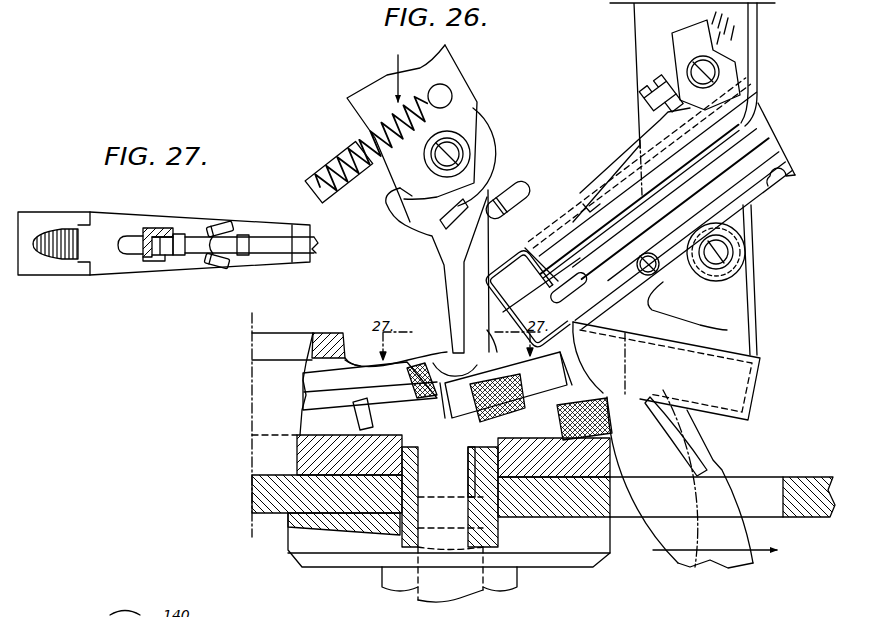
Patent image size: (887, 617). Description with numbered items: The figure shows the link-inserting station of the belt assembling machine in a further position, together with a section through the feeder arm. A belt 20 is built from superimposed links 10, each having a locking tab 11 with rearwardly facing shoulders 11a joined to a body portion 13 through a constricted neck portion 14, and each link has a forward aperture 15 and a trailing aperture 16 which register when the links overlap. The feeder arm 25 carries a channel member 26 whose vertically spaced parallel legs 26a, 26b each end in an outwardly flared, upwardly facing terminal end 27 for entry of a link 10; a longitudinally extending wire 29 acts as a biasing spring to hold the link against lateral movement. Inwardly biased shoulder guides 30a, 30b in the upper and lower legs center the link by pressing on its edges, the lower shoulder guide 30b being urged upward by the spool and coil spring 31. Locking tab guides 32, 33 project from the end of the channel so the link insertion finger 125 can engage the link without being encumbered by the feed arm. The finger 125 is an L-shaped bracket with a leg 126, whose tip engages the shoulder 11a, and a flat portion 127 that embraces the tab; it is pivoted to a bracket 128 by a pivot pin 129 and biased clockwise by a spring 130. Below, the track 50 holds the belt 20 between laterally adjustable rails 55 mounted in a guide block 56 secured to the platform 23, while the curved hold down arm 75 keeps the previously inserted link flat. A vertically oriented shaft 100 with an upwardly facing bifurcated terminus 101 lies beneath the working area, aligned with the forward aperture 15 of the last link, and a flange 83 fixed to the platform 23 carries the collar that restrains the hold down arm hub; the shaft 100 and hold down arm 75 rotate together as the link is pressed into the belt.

In FIG. 27, the link 10 is at (269, 237).
In FIG. 26, the link 10 is at (556, 259).
In FIG. 27, the locking tab 11 is at (126, 243).
In FIG. 26, the locking tab 11 is at (366, 426).
In FIG. 26, the rearwardly facing shoulders 11a is at (447, 353).
In FIG. 27, the body portion 13 is at (293, 263).
In FIG. 26, the body portion 13 is at (526, 292).
In FIG. 27, the constricted neck portion 14 is at (52, 230).
In FIG. 26, the constricted neck portion 14 is at (478, 348).
In FIG. 27, the forward aperture 15 is at (170, 258).
In FIG. 26, the forward aperture 15 is at (544, 368).
In FIG. 27, the trailing aperture 16 is at (247, 257).
In FIG. 26, the trailing aperture 16 is at (468, 411).
In FIG. 27, the belt 20 is at (62, 214).
In FIG. 26, the belt 20 is at (340, 346).
In FIG. 26, the platform 23 is at (797, 477).
In FIG. 26, the feeder arm 25 is at (650, 70).
In FIG. 26, the channel member 26 is at (578, 203).
In FIG. 26, the upper leg 26a is at (760, 104).
In FIG. 26, the lower leg 26b is at (775, 156).
In FIG. 26, the terminal end 27 is at (785, 185).
In FIG. 26, the wire 29 is at (759, 79).
In FIG. 26, the upper shoulder guide 30a is at (605, 172).
In FIG. 26, the lower shoulder guide 30b is at (790, 329).
In FIG. 26, the spool and coil spring 31 is at (745, 253).
In FIG. 27, the locking tab guide 32 is at (224, 224).
In FIG. 27, the locking tab guide 33 is at (212, 266).
In FIG. 26, the locking tab guide 33 is at (537, 240).
In FIG. 26, the track 50 is at (270, 398).
In FIG. 26, the rails 55 is at (618, 401).
In FIG. 26, the guide block 56 is at (253, 433).
In FIG. 26, the hold down arm 75 is at (713, 459).
In FIG. 26, the flange 83 is at (565, 568).
In FIG. 26, the shaft 100 is at (466, 591).
In FIG. 26, the bifurcated terminus 101 is at (466, 493).
In FIG. 27, the link insertion finger 125 is at (148, 228).
In FIG. 26, the link insertion finger 125 is at (408, 230).
In FIG. 27, the leg 126 is at (146, 262).
In FIG. 26, the leg 126 is at (454, 320).
In FIG. 27, the flat portion 127 is at (166, 229).
In FIG. 26, the flat portion 127 is at (487, 242).
In FIG. 26, the bracket 128 is at (448, 70).
In FIG. 26, the pivot pin 129 is at (448, 138).
In FIG. 26, the spring 130 is at (352, 151).